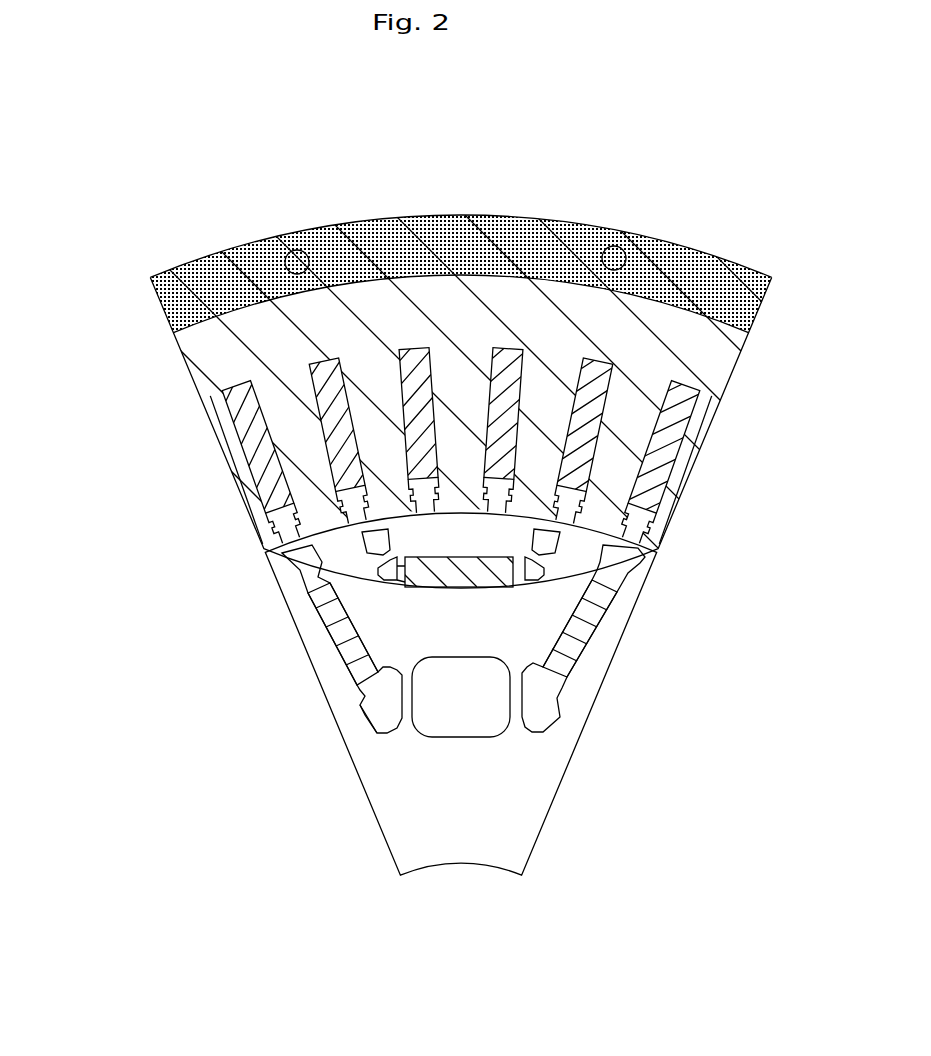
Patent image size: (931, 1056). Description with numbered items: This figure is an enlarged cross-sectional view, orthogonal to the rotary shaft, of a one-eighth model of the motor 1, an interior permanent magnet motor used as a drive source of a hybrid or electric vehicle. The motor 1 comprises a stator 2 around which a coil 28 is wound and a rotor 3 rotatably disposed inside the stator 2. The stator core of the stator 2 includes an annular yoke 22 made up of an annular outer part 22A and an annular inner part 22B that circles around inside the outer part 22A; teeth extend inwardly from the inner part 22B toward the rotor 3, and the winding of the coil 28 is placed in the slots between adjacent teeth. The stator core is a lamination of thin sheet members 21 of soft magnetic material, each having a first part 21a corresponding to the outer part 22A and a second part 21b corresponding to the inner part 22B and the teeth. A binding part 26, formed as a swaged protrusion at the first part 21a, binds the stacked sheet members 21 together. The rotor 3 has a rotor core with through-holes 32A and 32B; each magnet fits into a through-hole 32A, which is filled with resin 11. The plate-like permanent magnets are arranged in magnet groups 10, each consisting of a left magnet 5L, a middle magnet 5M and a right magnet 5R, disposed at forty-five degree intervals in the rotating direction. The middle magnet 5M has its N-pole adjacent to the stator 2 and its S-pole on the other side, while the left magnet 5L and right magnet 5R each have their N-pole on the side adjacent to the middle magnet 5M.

The motor 1 is at (746, 187).
The stator 2 is at (178, 247).
The rotor 3 is at (370, 851).
The magnet group 10 is at (370, 174).
The left magnet 5L is at (399, 575).
The middle magnet 5M is at (481, 578).
The right magnet 5R is at (534, 585).
The resin 11 is at (365, 703).
The sheet member 21 is at (832, 313).
The first part 21a is at (740, 307).
The second part 21b is at (714, 357).
The yoke 22 is at (63, 297).
The outer part 22A is at (165, 300).
The inner part 22B is at (199, 355).
The binding part 26 is at (622, 247).
The coil 28 is at (698, 410).
The through-hole 32A is at (572, 655).
The through-hole 32B is at (493, 727).